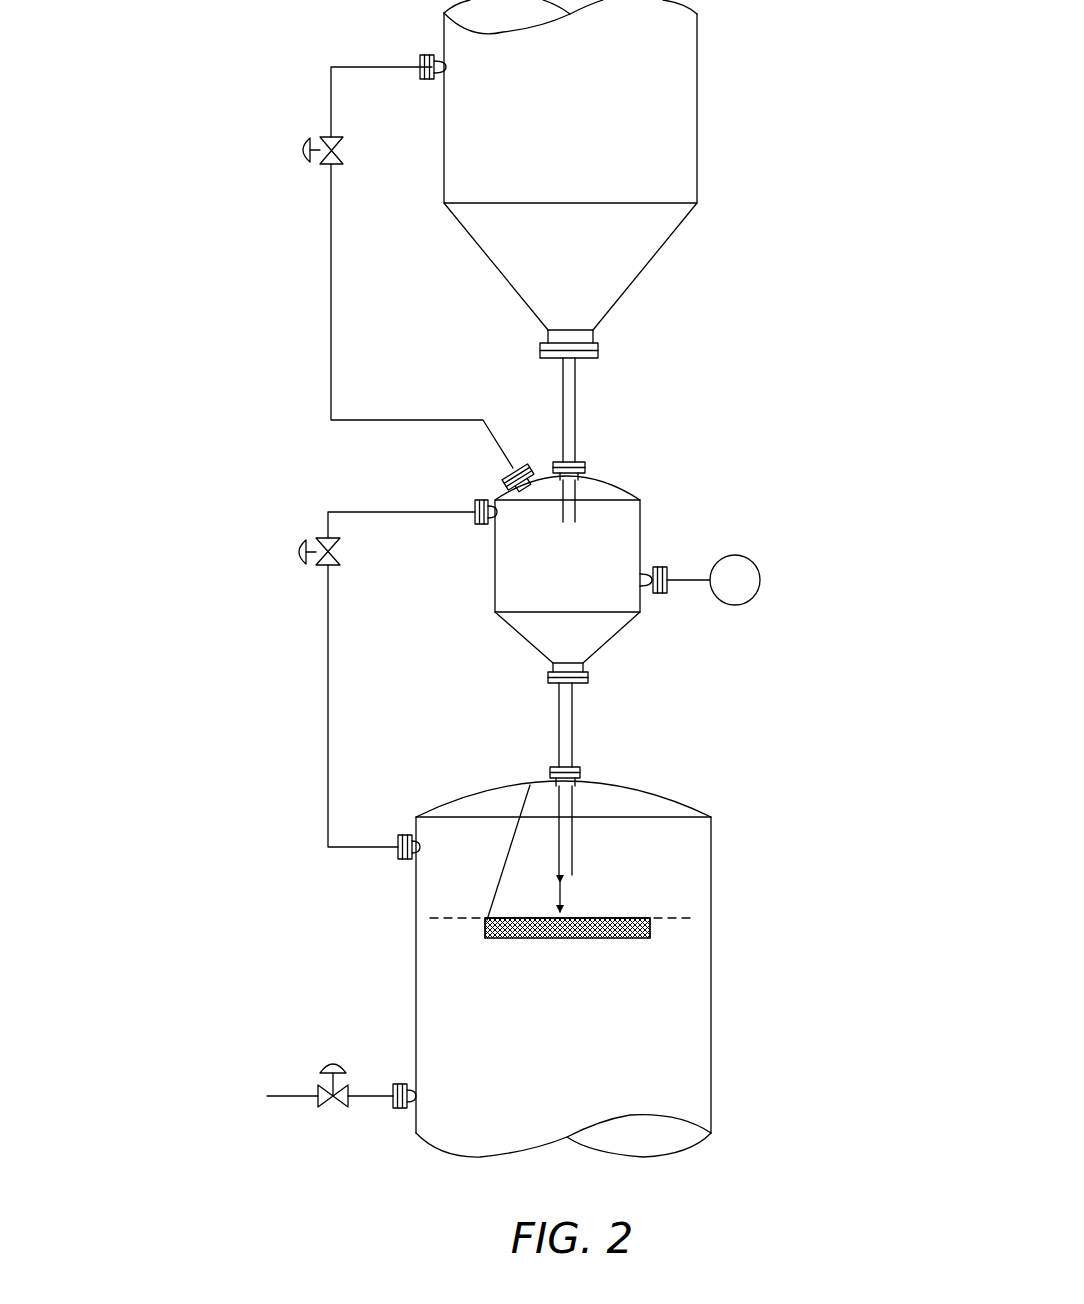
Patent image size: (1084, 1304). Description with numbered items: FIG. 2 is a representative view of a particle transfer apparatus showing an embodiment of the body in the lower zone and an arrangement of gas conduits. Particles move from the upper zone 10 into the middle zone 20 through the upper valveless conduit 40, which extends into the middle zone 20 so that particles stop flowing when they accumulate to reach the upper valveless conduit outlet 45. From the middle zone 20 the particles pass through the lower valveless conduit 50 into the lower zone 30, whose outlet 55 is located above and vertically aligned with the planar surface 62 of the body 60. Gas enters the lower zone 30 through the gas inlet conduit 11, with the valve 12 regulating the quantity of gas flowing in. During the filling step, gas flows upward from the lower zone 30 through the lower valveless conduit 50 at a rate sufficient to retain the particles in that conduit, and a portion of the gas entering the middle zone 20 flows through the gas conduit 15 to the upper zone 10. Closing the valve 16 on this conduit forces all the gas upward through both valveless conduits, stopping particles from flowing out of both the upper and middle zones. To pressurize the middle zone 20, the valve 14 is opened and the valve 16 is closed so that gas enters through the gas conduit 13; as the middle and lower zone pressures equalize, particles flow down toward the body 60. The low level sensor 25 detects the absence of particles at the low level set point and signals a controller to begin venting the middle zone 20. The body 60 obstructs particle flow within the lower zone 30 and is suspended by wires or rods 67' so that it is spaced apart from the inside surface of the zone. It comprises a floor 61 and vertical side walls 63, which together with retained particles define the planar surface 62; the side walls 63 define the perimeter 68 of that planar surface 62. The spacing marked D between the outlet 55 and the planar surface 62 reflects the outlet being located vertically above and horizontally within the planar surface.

The upper zone 10 is at (700, 97).
The gas inlet conduit 11 is at (290, 1093).
The valve 12 is at (334, 1055).
The gas conduit 13 is at (447, 510).
The valve 14 is at (300, 540).
The gas conduit 15 is at (400, 64).
The valve 16 is at (305, 140).
The middle zone 20 is at (641, 522).
The low level sensor 25 is at (757, 562).
The lower zone 30 is at (713, 847).
The upper valveless conduit 40 is at (577, 412).
The upper valveless conduit outlet 45 is at (567, 525).
The lower valveless conduit 50 is at (574, 728).
The outlet 55 is at (565, 884).
The body 60 is at (660, 932).
The floor 61 is at (565, 938).
The planar surface 62 is at (410, 918).
The side walls 63 is at (487, 935).
The wires or rods 67' is at (487, 852).
The perimeter 68 is at (650, 918).
The distance between outlet and plate D is at (542, 897).